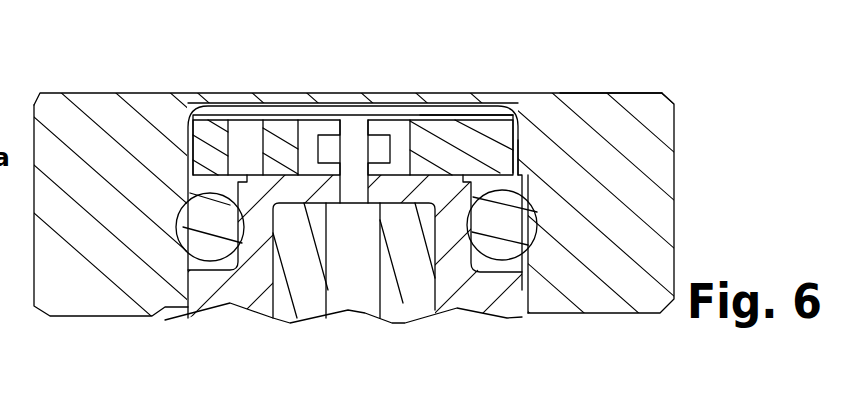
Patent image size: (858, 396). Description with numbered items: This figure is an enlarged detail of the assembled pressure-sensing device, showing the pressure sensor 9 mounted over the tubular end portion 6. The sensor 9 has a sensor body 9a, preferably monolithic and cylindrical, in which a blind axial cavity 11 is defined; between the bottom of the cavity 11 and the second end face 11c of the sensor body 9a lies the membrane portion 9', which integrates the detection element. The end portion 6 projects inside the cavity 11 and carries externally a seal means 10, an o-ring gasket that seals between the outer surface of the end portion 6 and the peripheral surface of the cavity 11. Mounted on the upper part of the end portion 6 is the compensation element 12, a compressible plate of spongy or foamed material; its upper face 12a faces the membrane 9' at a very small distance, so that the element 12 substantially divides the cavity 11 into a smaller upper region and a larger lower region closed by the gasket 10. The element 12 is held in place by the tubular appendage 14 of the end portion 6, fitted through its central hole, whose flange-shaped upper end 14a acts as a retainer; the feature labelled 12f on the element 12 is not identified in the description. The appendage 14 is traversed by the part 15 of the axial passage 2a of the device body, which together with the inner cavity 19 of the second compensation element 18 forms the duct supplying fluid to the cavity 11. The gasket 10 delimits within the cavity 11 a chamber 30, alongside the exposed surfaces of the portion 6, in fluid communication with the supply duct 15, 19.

The sensor 9 is at (429, 198).
The sensor body 9a is at (600, 82).
The membrane portion 9' is at (355, 168).
The second end face of the sensor body 11c is at (459, 106).
The compensation element 12 is at (204, 179).
The seat ring recess 12f is at (232, 150).
The upper face of the compensation element 12a is at (499, 117).
The upper end of the appendage 14a is at (311, 123).
The end appendage 14 is at (386, 153).
The part of the axial passage 15 is at (368, 145).
The chamber 30 is at (512, 182).
The blind axial cavity 11 is at (186, 266).
The seal means 10 is at (530, 230).
The end portion 6 is at (246, 296).
The second compensation element 18 is at (311, 303).
The inner cavity 19 is at (379, 308).
The axial passage 2a is at (429, 311).